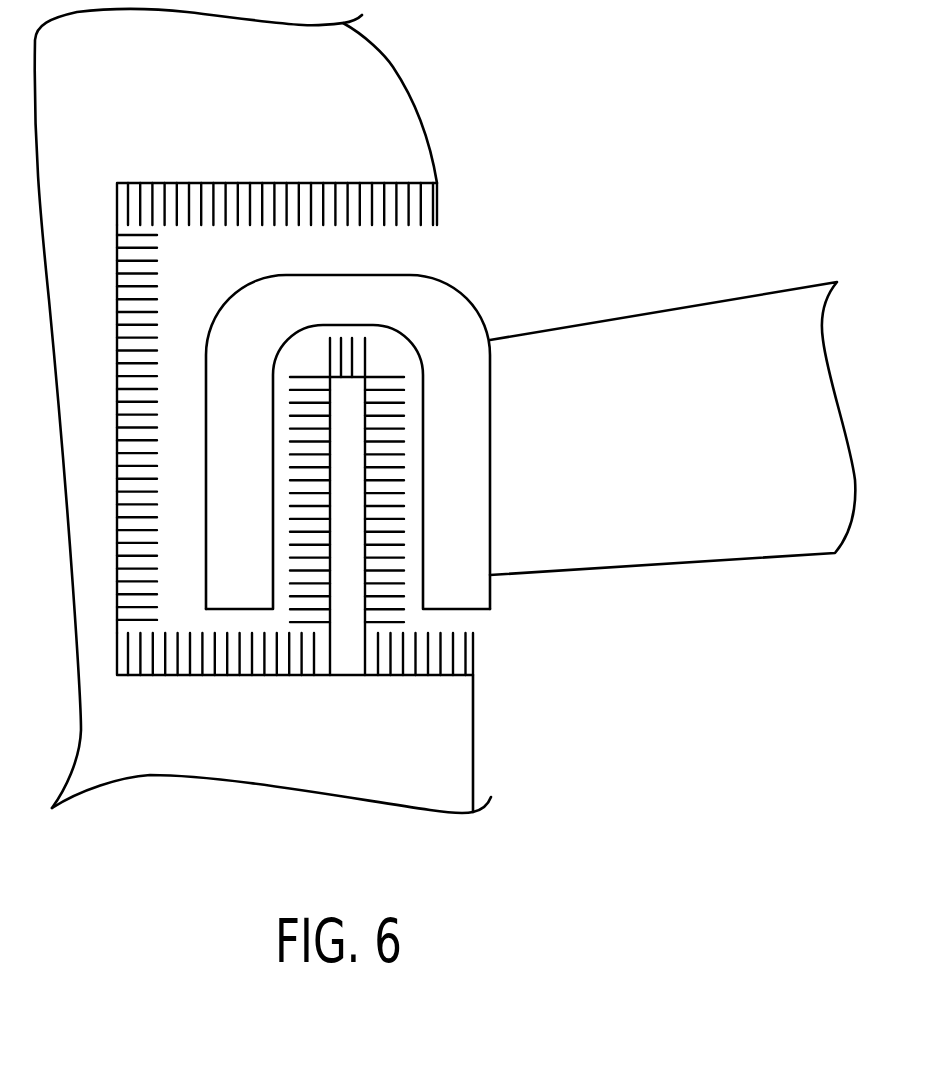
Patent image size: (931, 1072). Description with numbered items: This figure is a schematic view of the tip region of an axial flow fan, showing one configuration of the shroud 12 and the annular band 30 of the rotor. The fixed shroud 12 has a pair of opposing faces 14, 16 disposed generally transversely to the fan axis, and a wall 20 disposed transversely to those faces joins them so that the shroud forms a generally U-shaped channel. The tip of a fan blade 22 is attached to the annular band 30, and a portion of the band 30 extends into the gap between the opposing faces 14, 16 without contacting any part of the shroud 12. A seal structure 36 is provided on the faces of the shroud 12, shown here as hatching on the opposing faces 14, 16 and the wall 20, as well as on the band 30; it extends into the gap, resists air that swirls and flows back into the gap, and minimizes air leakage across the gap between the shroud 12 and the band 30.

The shroud 12 is at (473, 775).
The opposing face 14 is at (212, 662).
The opposing face 16 is at (212, 185).
The wall 20 is at (117, 448).
The fan blade 22 is at (652, 548).
The annular band 30 is at (473, 308).
The seal structure 36 is at (338, 205).